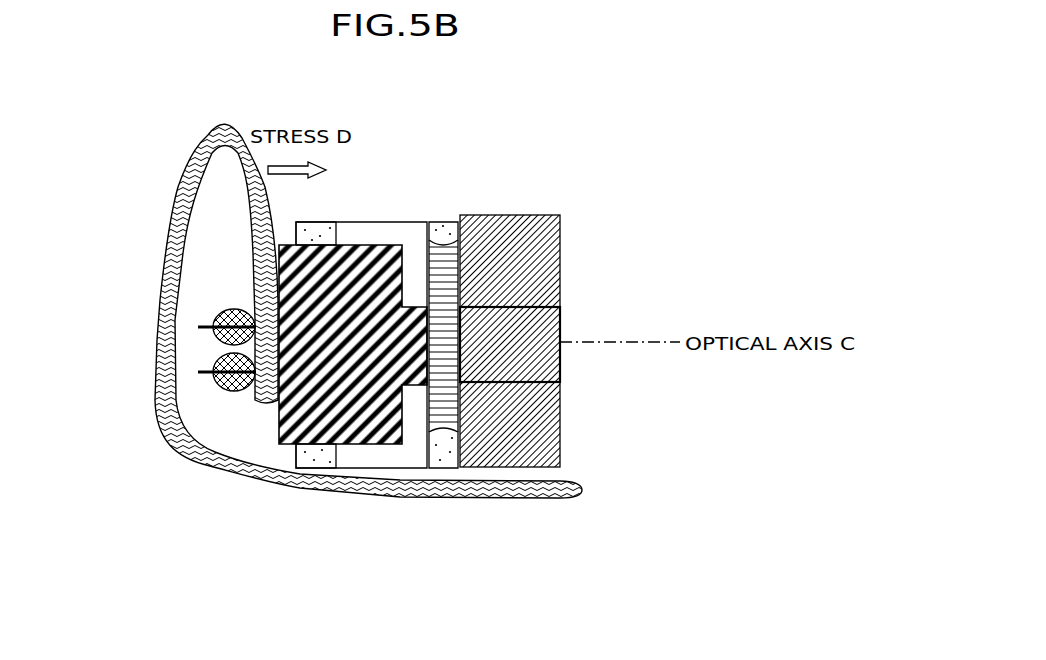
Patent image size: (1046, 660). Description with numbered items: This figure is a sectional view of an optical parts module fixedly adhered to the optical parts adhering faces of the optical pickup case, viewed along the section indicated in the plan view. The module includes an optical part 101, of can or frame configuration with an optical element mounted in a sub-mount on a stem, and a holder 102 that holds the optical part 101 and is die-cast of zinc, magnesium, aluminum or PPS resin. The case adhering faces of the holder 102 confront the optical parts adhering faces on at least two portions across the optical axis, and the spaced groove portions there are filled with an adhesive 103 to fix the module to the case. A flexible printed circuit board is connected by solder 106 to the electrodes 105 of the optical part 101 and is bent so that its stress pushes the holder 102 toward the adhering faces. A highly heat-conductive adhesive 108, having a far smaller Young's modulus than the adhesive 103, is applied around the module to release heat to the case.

The optical part 101 is at (305, 224).
The holder 102 is at (378, 220).
The adhesive 103 is at (446, 228).
The electrodes 105 is at (228, 322).
The solder 106 is at (247, 390).
The highly heat-conductive adhesive 108 is at (254, 484).